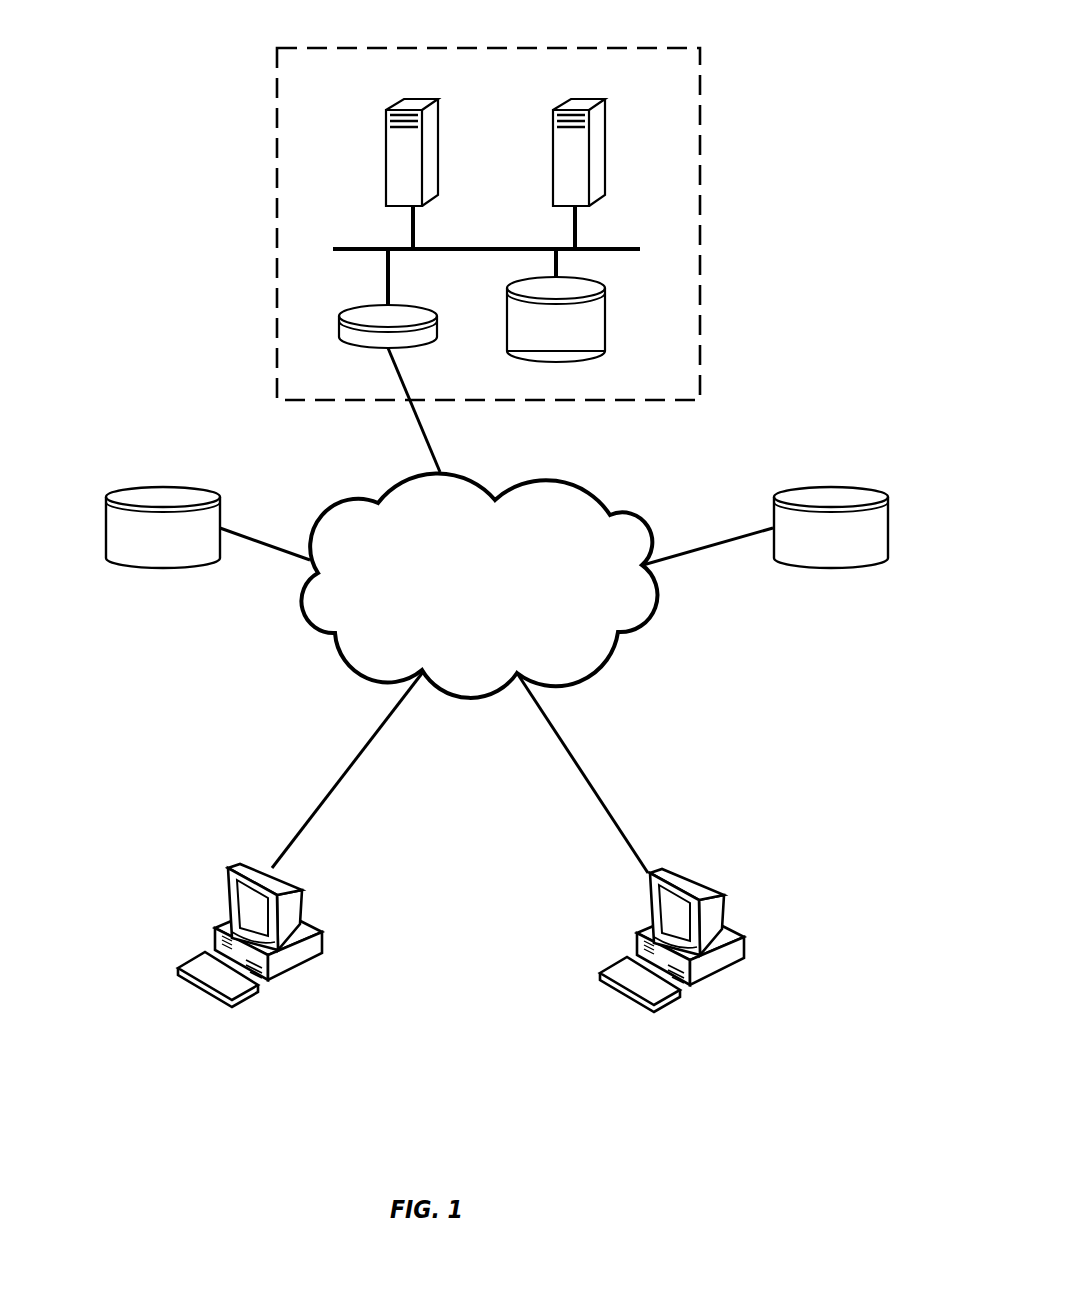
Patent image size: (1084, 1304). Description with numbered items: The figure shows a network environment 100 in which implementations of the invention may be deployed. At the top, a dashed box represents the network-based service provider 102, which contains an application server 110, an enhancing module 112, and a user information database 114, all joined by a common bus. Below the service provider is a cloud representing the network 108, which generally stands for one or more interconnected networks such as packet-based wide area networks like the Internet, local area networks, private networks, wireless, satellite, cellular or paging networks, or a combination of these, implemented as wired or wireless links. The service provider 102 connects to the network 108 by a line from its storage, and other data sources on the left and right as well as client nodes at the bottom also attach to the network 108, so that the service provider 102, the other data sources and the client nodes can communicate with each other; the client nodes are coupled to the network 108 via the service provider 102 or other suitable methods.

The network environment 100 is at (735, 1149).
The network-based service provider 102 is at (637, 48).
The network 108 is at (593, 490).
The application server 110 is at (442, 153).
The enhancing module 112 is at (609, 153).
The user information database 114 is at (607, 318).